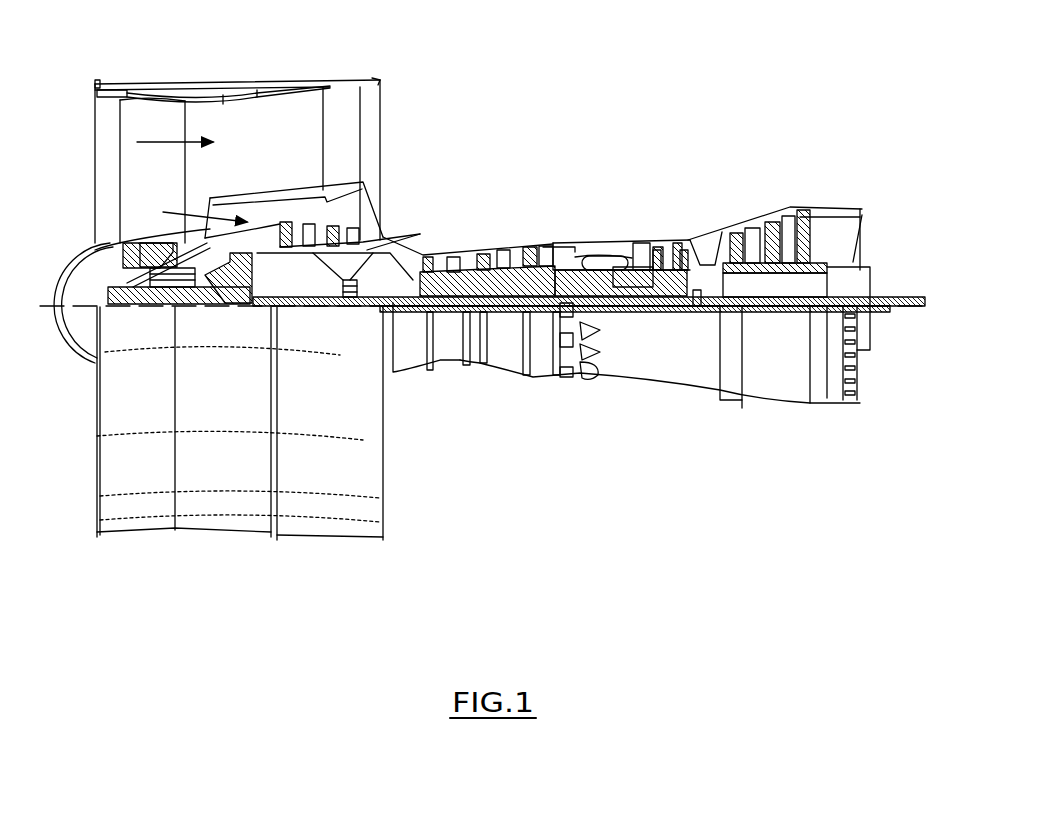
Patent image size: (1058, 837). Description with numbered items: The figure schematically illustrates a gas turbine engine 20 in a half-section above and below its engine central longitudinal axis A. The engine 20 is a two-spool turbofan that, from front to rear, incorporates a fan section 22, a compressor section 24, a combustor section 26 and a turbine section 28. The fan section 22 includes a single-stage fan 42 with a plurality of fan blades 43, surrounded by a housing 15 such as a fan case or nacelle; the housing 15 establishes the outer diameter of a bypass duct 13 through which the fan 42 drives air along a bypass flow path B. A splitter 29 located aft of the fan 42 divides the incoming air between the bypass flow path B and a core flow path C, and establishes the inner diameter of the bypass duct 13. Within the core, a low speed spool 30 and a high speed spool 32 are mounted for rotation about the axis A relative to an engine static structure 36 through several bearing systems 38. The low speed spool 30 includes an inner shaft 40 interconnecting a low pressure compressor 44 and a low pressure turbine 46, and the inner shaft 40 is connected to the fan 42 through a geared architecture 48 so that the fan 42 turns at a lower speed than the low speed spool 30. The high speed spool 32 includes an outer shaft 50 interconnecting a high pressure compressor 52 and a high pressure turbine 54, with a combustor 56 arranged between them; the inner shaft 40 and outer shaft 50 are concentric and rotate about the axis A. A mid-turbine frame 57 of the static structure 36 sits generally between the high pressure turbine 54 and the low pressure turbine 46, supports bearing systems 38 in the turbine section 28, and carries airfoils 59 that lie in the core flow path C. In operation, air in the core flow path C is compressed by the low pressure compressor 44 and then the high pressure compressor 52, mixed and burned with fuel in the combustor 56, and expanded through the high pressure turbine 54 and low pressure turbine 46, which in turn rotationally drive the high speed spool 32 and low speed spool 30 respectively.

The bypass duct 13 is at (275, 103).
The housing 15 is at (241, 80).
The gas turbine engine 20 is at (604, 124).
The fan section 22 is at (184, 76).
The compressor section 24 is at (424, 231).
The combustor section 26 is at (599, 222).
The turbine section 28 is at (734, 196).
The splitter 29 is at (227, 198).
The low speed spool 30 is at (507, 314).
The high speed spool 32 is at (543, 247).
The engine static structure 36 is at (541, 380).
The bearing systems 38 is at (353, 295).
The inner shaft 40 is at (400, 312).
The fan 42 is at (145, 230).
The fan blades 43 is at (177, 186).
The low pressure compressor 44 is at (400, 210).
The low pressure turbine 46 is at (794, 208).
The geared architecture 48 is at (247, 293).
The outer shaft 50 is at (597, 308).
The high pressure compressor 52 is at (493, 257).
The high pressure turbine 54 is at (657, 250).
The combustor 56 is at (598, 260).
The mid-turbine frame 57 is at (708, 228).
The airfoils 59 is at (733, 283).
The engine central longitudinal axis A is at (914, 306).
The bypass flow path B is at (162, 141).
The core flow path C is at (197, 212).